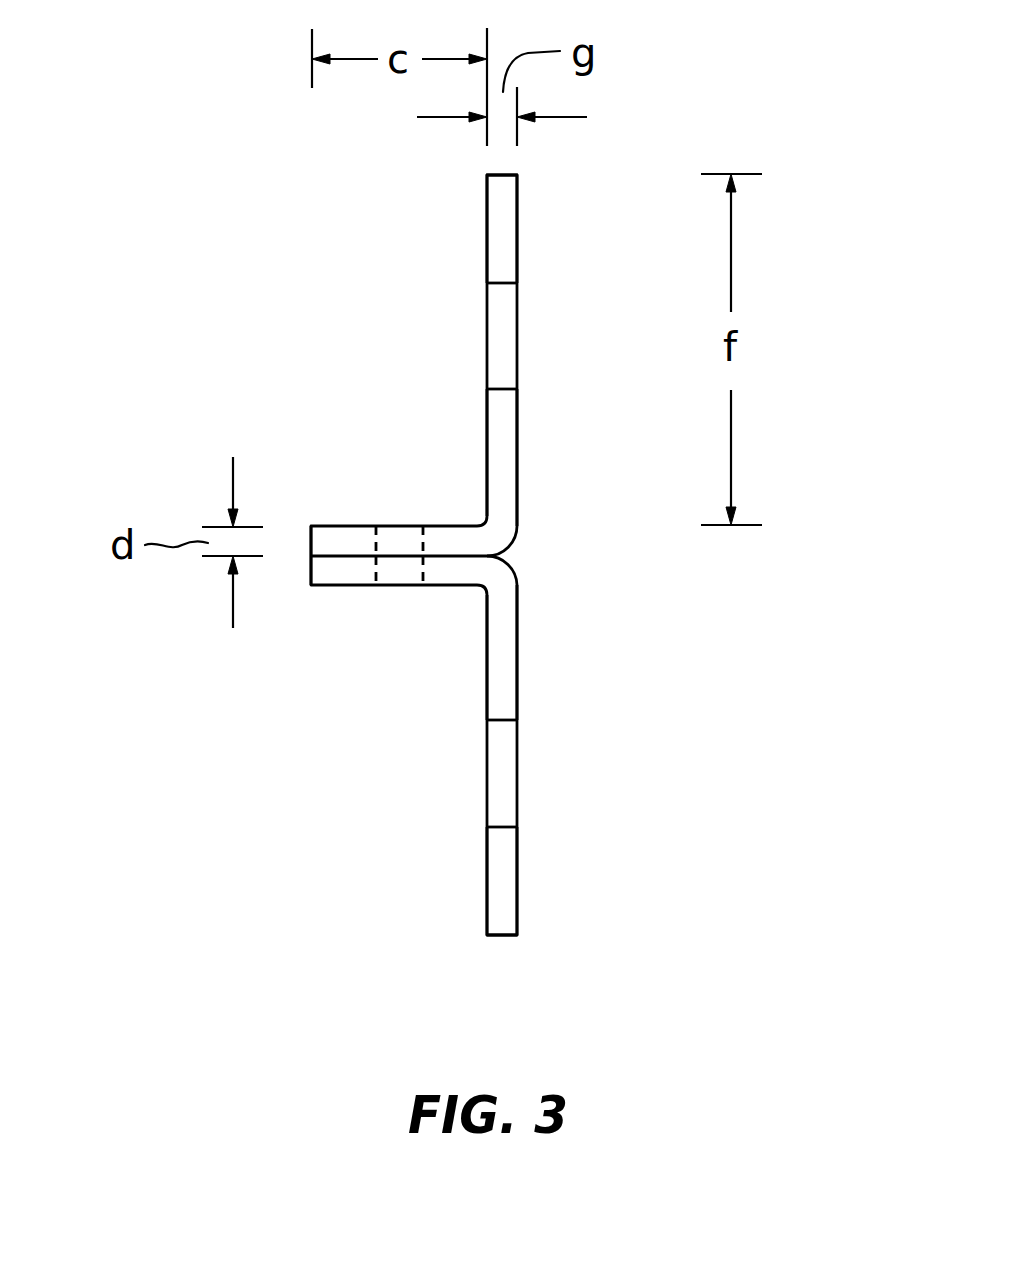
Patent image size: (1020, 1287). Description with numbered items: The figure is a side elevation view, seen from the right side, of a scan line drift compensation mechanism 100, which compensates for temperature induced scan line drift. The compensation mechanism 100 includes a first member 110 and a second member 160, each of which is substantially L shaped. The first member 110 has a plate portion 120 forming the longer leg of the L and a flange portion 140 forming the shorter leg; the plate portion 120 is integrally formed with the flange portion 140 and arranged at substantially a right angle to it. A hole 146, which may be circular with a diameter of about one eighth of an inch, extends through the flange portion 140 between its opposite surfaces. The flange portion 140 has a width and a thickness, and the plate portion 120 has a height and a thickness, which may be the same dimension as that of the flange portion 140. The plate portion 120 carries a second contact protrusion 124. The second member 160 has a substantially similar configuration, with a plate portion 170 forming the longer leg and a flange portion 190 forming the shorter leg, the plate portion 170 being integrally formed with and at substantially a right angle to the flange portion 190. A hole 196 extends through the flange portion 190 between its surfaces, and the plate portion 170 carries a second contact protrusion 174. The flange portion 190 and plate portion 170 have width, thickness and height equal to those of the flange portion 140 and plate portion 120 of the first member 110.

The scan line drift compensation mechanism 100 is at (249, 184).
The first member 110 is at (563, 394).
The plate portion 120 is at (487, 408).
The second contact protrusion 124 is at (501, 285).
The flange portion 140 is at (442, 522).
The hole 146 is at (373, 538).
The second member 160 is at (564, 713).
The plate portion 170 is at (517, 634).
The second contact protrusion 174 is at (500, 827).
The flange portion 190 is at (445, 585).
The hole 196 is at (373, 569).